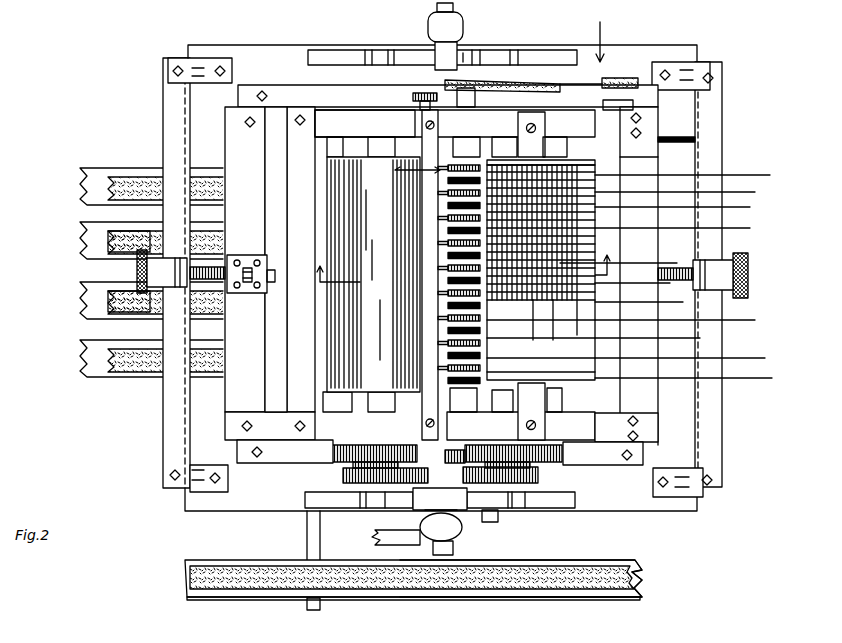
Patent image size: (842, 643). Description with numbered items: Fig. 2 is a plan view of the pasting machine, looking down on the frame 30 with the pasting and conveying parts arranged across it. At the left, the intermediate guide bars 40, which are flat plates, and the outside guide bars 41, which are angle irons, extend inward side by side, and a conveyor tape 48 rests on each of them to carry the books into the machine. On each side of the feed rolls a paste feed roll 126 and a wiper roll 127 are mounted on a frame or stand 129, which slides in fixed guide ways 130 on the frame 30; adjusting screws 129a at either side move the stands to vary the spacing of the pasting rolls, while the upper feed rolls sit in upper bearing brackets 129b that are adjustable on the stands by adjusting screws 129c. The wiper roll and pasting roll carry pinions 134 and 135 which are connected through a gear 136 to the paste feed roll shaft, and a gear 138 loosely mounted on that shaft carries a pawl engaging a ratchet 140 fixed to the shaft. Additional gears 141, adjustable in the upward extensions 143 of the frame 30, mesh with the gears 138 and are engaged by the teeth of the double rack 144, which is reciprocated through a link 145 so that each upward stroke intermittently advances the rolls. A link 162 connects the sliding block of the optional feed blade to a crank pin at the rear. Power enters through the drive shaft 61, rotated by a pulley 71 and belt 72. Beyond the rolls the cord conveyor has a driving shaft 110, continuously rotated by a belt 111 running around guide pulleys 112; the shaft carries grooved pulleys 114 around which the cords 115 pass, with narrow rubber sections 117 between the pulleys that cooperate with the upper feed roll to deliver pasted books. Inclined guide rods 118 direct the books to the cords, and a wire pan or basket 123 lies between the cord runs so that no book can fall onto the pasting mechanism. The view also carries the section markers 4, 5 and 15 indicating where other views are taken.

The frame 30 is at (232, 48).
The link 162 is at (425, 32).
The upward extensions of the frame 143 is at (547, 50).
The direction arrow 15 is at (610, 42).
The guide pulleys 112 is at (487, 81).
The belt 111 is at (590, 88).
The driving shaft 110 is at (473, 100).
The guide ways 130 is at (290, 87).
The upper bearing brackets 129b is at (337, 110).
The frame or stand 129 is at (273, 123).
The wire pan or basket 123 is at (580, 165).
The cords 115 is at (750, 174).
The outside guide bars 41 is at (80, 187).
The conveyor tape 48 is at (148, 233).
The intermediate guide bars 40 is at (80, 246).
The adjusting screws 129a is at (137, 275).
The adjusting screws 129c is at (272, 293).
The paste feed roll 126 is at (355, 227).
The section line 4 is at (468, 272).
The inclined guide rods 118 is at (440, 292).
The wiper roll 127 is at (333, 348).
The grooved pulleys or rolls 114 is at (480, 333).
The narrow rubber sections 117 is at (480, 363).
The section line 5 is at (419, 169).
The gear 136 is at (355, 445).
The pinion 134 is at (320, 454).
The pinion 135 is at (452, 450).
The ratchet 140 is at (532, 447).
The gear 138 is at (343, 476).
The drive shaft 61 is at (307, 545).
The link 145 is at (388, 537).
The double rack 144 is at (455, 510).
The additional gears 141 is at (490, 518).
The pulley 71 is at (245, 600).
The belt 72 is at (534, 598).